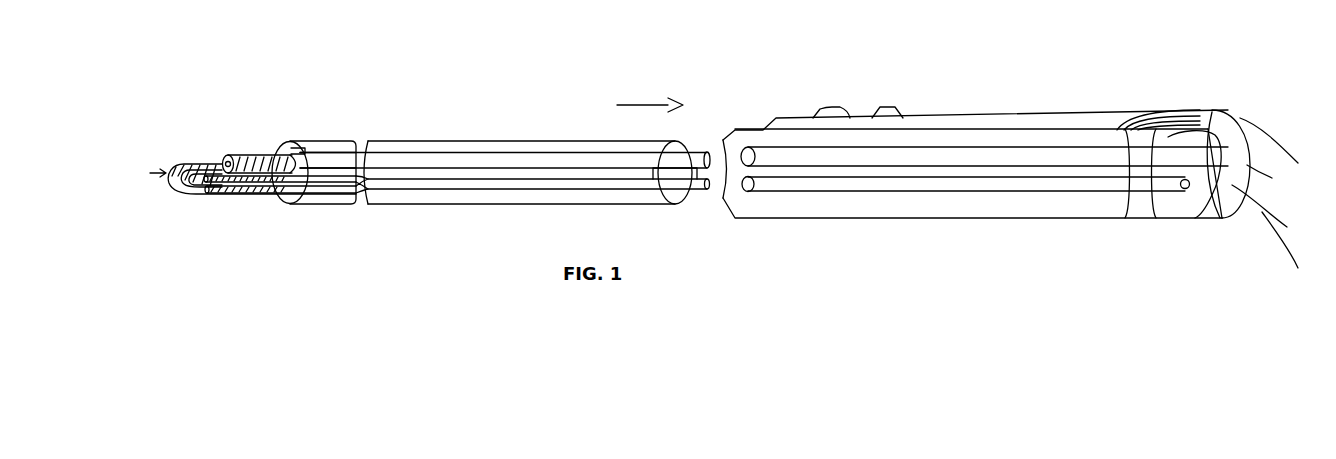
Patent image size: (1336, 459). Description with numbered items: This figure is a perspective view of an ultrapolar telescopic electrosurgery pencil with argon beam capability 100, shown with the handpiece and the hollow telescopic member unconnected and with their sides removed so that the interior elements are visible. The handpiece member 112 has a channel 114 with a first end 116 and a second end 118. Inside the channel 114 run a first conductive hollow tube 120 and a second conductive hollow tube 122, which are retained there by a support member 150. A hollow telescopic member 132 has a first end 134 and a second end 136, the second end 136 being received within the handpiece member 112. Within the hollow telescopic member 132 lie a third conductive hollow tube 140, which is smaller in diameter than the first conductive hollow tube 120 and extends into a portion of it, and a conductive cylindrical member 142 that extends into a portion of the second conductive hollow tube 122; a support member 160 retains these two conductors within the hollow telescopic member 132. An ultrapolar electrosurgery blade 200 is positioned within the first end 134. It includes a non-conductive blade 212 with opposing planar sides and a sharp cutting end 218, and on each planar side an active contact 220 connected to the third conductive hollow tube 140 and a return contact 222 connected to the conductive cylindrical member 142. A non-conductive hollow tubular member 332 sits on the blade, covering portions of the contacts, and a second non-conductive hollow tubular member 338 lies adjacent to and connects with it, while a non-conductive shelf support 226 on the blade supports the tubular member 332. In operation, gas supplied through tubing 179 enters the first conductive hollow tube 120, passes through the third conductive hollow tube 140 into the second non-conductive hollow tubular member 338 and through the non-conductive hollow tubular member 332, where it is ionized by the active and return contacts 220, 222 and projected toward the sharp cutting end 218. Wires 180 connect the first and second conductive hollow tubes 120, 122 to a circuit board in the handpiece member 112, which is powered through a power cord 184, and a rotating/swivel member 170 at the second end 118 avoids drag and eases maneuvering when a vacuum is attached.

The ultrapolar telescopic electrosurgery pencil with argon beam capability 100 is at (562, 52).
The handpiece member 112 is at (952, 219).
The channel 114 is at (887, 208).
The first end 116 is at (720, 150).
The second end 118 is at (1225, 200).
The first conductive hollow tube 120 is at (800, 157).
The second conductive hollow tube 122 is at (798, 186).
The hollow telescopic member 132 is at (438, 140).
The first end 134 is at (290, 141).
The second end 136 is at (684, 201).
The third conductive hollow tube 140 is at (420, 160).
The conductive cylindrical member 142 is at (515, 185).
The support member 150 is at (1142, 207).
The support member 160 is at (360, 198).
The rotating/swivel member 170 is at (1275, 140).
The tubing 179 is at (1250, 152).
The wires 180 is at (886, 106).
The power cord 184 is at (1267, 213).
The ultrapolar electrosurgery blade 200 is at (187, 190).
The non-conductive blade 212 is at (193, 172).
The sharp cutting end 218 is at (164, 174).
The active contact 220 is at (232, 181).
The return contact 222 is at (195, 190).
The non-conductive shelf support 226 is at (253, 190).
The non-conductive hollow tubular member 332 is at (240, 155).
The second non-conductive hollow tubular member 338 is at (325, 165).